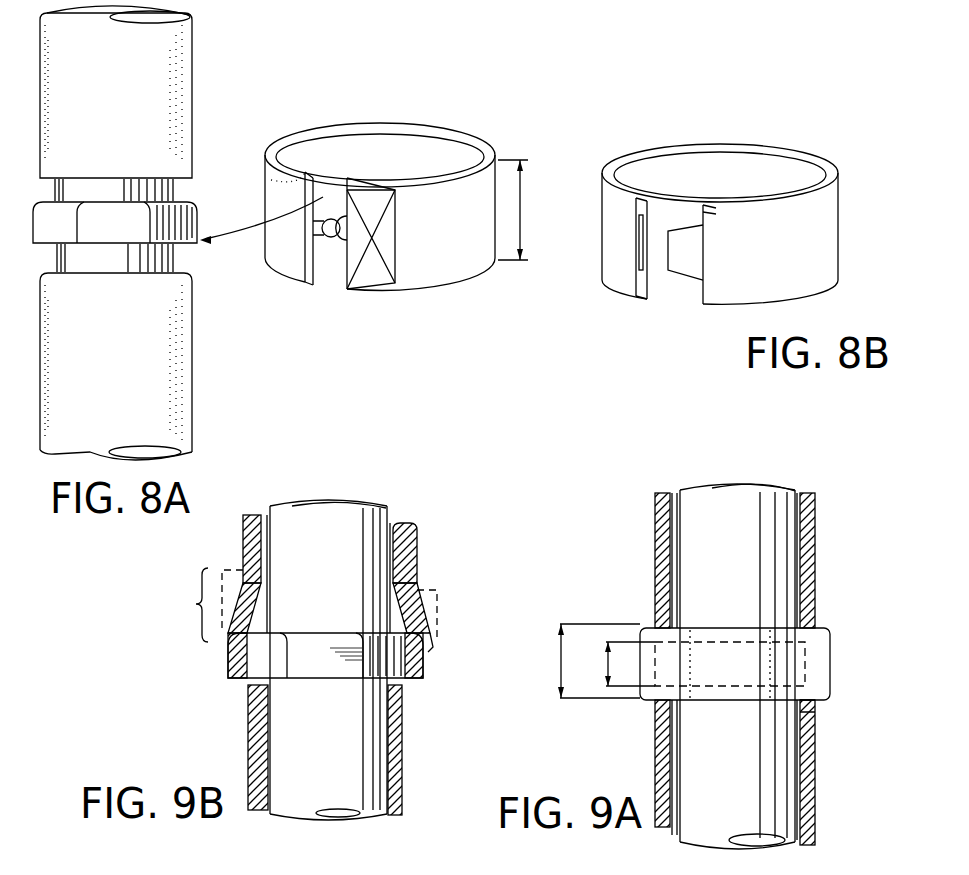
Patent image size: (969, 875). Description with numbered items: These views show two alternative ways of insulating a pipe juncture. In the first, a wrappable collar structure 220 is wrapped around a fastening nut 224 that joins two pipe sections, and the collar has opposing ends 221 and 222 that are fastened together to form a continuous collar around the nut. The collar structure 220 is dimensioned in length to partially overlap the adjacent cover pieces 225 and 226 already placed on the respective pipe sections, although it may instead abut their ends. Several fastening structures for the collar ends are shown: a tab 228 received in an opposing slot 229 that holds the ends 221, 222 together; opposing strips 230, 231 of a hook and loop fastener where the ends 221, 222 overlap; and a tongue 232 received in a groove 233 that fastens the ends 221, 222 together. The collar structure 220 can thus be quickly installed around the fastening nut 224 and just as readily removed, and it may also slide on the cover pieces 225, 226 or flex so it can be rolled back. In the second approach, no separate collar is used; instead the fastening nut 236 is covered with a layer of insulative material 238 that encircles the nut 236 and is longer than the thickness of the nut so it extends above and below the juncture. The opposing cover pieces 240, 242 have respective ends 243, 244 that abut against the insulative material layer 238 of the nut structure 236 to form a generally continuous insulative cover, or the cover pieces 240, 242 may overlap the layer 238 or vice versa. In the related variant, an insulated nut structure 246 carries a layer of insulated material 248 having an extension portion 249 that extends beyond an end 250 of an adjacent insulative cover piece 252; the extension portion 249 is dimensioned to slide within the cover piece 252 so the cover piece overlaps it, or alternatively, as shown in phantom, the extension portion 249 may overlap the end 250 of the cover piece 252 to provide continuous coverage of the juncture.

In FIG. 8A, the wrappable collar structure 220 is at (455, 124).
In FIG. 8B, the wrappable collar structure 220 is at (773, 143).
In FIG. 8A, the opposing end 221 is at (362, 275).
In FIG. 8B, the opposing end 221 is at (747, 267).
In FIG. 8A, the opposing end 222 is at (310, 283).
In FIG. 8B, the opposing end 222 is at (648, 292).
In FIG. 8A, the fastening nut 224 is at (112, 212).
In FIG. 8A, the cover piece 225 is at (112, 92).
In FIG. 8A, the cover piece 226 is at (120, 356).
In FIG. 8A, the tab 228 is at (318, 238).
In FIG. 8A, the slot 229 is at (373, 250).
In FIG. 8A, the hook and loop fastener strip 230 is at (308, 176).
In FIG. 8A, the hook and loop fastener strip 231 is at (403, 205).
In FIG. 8B, the tongue 232 is at (683, 279).
In FIG. 8B, the groove 233 is at (638, 257).
In FIG. 9A, the fastening nut 236 is at (728, 690).
In FIG. 9A, the layer of insulative material 238 is at (832, 665).
In FIG. 9A, the cover piece 240 is at (822, 583).
In FIG. 9A, the cover piece 242 is at (818, 820).
In FIG. 9A, the end of cover piece 243 is at (822, 620).
In FIG. 9A, the end of cover piece 244 is at (808, 712).
In FIG. 9B, the insulated nut structure 246 is at (322, 670).
In FIG. 9B, the layer of insulated material 248 is at (425, 668).
In FIG. 9B, the extension portion 249 is at (197, 605).
In FIG. 9B, the end of cover piece 250 is at (431, 640).
In FIG. 9B, the insulative cover piece 252 is at (418, 537).